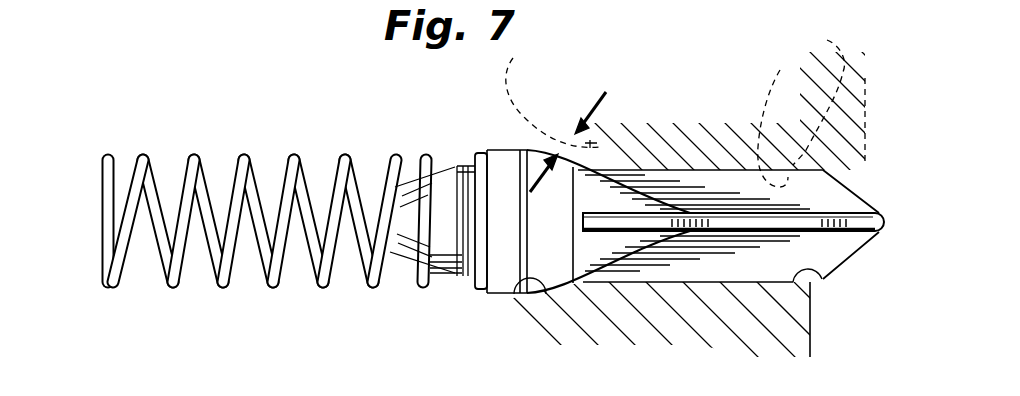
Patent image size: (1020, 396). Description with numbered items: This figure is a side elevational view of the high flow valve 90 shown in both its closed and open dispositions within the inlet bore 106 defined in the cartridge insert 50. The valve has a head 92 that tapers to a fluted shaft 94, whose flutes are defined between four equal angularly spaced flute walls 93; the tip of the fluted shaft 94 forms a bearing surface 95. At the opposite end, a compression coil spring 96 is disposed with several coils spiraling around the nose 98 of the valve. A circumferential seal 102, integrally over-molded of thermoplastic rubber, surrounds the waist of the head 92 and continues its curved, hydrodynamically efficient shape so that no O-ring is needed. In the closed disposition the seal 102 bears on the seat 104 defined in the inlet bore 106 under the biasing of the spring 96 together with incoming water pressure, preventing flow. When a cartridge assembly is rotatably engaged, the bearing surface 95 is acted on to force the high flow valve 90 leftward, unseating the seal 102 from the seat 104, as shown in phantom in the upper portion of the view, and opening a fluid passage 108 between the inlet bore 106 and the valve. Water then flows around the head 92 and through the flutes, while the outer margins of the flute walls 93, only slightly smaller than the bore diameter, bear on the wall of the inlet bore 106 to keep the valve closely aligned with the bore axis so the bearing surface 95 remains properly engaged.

The cartridge insert 50 is at (786, 75).
The high flow valve 90 is at (443, 139).
The head 92 is at (500, 149).
The flute walls 93 is at (848, 193).
The fluted shaft 94 is at (668, 170).
The bearing surface 95 is at (880, 224).
The compression coil spring 96 is at (344, 154).
The nose 98 is at (374, 200).
The circumferential seal 102 is at (520, 258).
The seat 104 is at (480, 360).
The inlet bore 106 is at (845, 60).
The fluid passage 108 is at (605, 95).